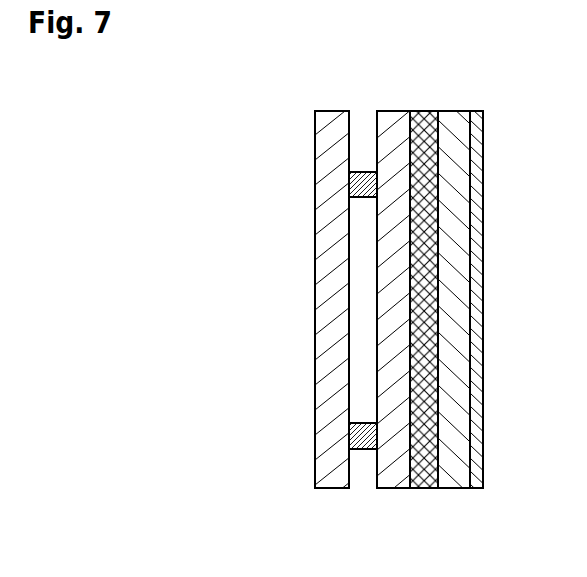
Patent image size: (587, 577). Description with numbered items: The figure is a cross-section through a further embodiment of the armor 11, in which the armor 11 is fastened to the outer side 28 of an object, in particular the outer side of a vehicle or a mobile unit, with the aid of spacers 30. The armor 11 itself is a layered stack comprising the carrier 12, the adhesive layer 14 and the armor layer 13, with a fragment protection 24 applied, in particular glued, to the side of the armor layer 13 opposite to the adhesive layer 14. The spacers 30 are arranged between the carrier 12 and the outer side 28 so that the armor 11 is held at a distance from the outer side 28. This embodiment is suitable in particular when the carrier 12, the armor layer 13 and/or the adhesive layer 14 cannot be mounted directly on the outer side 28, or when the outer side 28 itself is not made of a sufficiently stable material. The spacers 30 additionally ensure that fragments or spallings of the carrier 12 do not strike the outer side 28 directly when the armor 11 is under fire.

The armor 11 is at (407, 312).
The carrier 12 is at (393, 485).
The armor layer 13 is at (455, 485).
The adhesive layer 14 is at (430, 483).
The fragment protection 24 is at (483, 442).
The outer side 28 is at (315, 452).
The spacers 30 is at (372, 452).